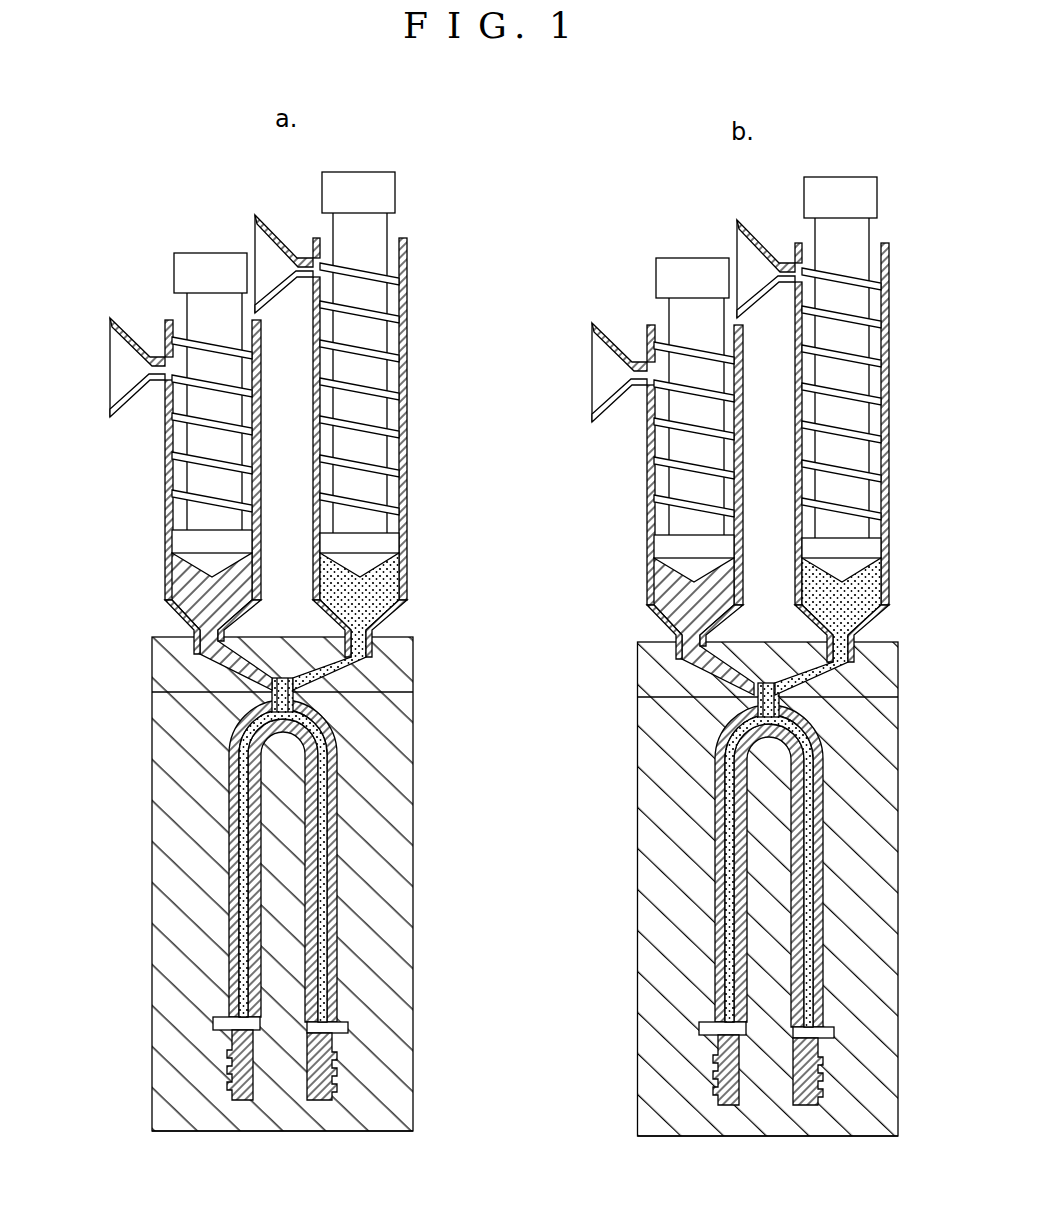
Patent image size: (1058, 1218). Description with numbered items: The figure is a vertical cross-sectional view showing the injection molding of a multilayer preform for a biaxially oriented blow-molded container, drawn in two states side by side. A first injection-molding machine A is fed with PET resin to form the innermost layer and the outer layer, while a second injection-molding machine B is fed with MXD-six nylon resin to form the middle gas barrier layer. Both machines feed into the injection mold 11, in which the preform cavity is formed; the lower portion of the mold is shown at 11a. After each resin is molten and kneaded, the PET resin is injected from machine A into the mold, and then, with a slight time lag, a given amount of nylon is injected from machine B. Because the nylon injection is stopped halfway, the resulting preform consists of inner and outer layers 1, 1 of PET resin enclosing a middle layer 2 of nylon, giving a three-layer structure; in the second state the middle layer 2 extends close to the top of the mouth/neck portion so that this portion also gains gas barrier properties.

The inner and outer layers 1 is at (229, 797).
The middle layer 2 is at (337, 945).
The injection mold 11 is at (122, 925).
The mold lower part 11a is at (282, 1113).
The first injection-molding machine A is at (96, 360).
The second injection-molding machine B is at (240, 237).